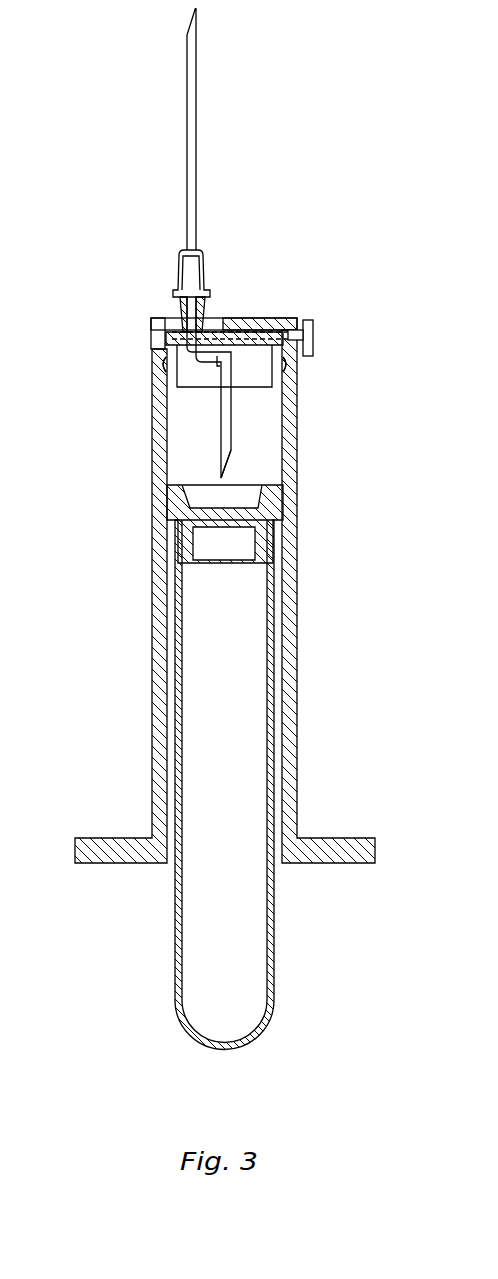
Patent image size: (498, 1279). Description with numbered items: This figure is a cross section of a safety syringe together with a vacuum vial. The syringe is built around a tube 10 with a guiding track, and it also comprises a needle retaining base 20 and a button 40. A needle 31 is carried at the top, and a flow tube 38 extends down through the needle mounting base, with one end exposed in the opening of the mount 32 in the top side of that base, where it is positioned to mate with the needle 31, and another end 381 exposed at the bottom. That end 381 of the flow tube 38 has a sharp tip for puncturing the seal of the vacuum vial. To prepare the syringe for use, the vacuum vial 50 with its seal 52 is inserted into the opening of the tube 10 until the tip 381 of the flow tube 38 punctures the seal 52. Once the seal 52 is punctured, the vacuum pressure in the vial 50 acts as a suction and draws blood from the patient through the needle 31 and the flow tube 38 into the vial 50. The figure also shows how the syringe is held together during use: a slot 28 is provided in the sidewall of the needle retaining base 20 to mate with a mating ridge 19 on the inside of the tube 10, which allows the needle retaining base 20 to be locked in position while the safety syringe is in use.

The tube 10 is at (300, 711).
The mating ridge 19 is at (286, 363).
The needle retaining base 20 is at (285, 323).
The slot 28 is at (167, 371).
The needle 31 is at (182, 278).
The mount 32 is at (180, 310).
The flow tube 38 is at (235, 393).
The end of the flow tube 381 is at (238, 456).
The button 40 is at (313, 336).
The vacuum vial 50 is at (238, 987).
The seal 52 is at (190, 512).